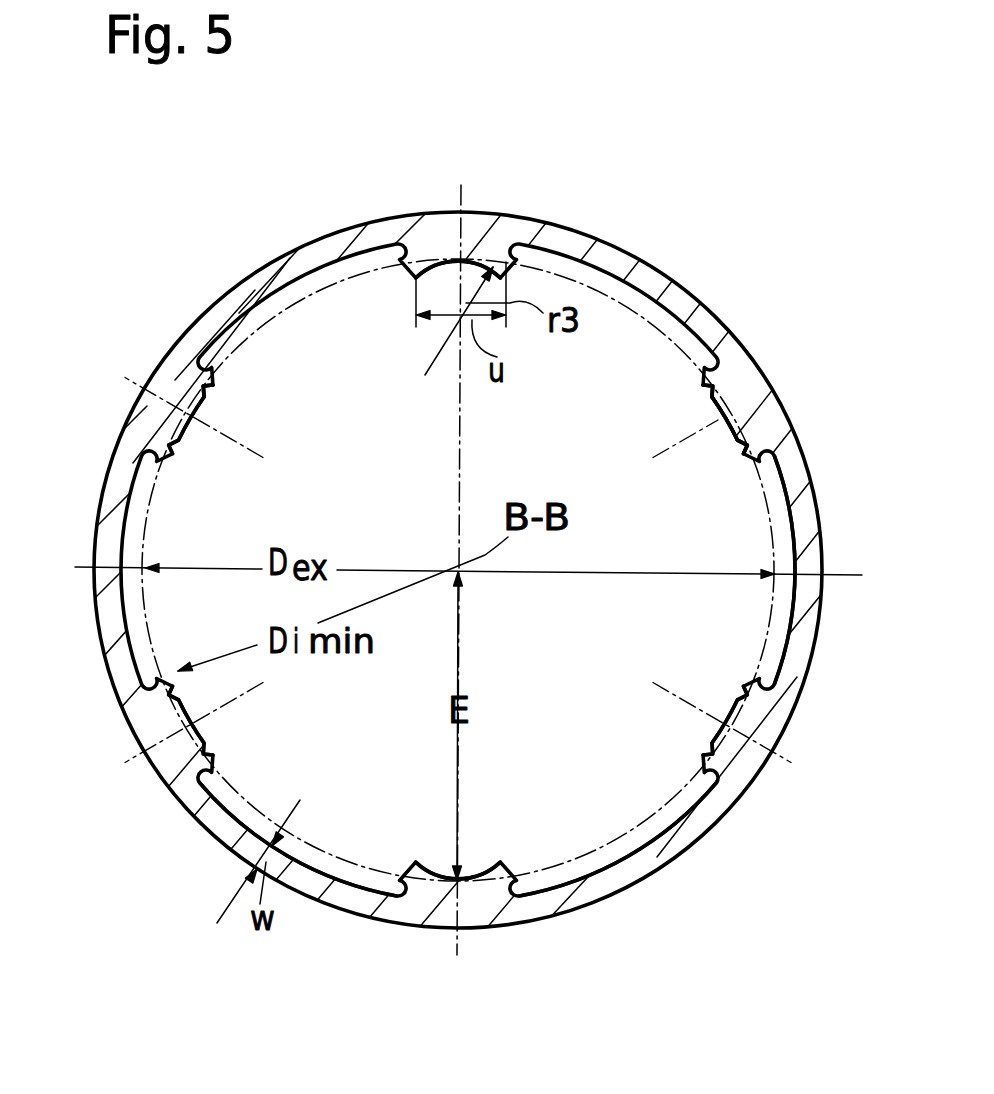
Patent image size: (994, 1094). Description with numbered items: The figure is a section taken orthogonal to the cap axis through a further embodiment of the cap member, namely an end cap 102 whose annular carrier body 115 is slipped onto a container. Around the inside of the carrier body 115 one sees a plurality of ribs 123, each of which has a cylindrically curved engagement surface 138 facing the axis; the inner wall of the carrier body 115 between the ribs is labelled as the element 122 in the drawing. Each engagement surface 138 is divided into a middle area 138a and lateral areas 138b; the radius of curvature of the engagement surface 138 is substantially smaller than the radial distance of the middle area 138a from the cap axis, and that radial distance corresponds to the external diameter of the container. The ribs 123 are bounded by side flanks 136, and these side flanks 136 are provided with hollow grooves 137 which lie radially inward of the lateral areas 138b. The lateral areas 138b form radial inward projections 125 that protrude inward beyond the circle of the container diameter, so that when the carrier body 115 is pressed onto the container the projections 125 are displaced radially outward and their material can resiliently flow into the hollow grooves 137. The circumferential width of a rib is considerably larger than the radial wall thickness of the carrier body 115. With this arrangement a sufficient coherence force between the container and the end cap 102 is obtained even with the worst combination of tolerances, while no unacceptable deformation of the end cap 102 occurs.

The end cap 102 is at (766, 256).
The carrier body 115 is at (338, 222).
The inner wall surface 122 is at (795, 563).
The ribs 123 is at (216, 740).
The radial inward projections 125 is at (513, 256).
The side flanks 136 is at (747, 690).
The hollow grooves 137 is at (727, 365).
The engagement surfaces 138 is at (213, 400).
The middle area 138a is at (817, 377).
The lateral areas 138b is at (693, 390).